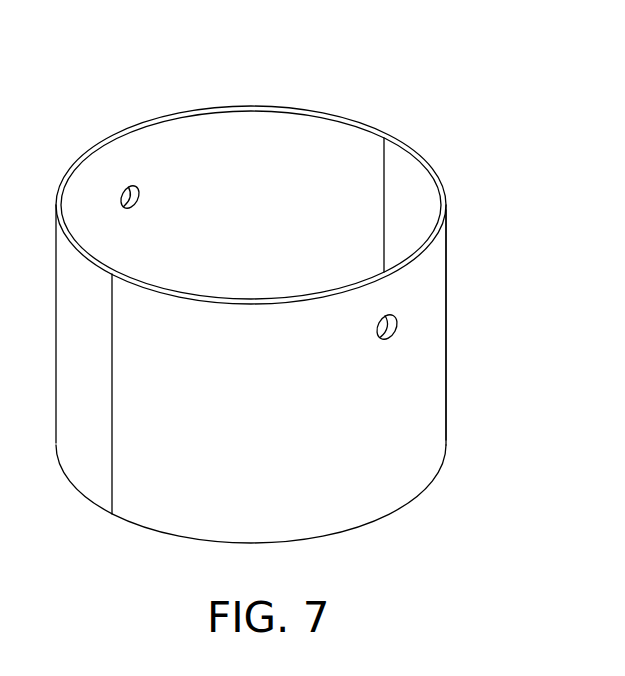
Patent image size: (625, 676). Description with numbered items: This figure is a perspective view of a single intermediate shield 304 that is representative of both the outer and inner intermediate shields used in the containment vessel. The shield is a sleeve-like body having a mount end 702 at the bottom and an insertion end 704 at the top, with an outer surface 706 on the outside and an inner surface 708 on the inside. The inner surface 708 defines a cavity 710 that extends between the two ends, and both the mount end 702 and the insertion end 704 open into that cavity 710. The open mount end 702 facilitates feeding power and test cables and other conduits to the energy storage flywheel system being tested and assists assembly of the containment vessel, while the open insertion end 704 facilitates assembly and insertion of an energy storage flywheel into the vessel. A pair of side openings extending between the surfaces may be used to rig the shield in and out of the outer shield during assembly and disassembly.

The outer intermediate shield 304 is at (300, 289).
The mount end 702 is at (413, 500).
The insertion end 704 is at (292, 107).
The outer surface 706 is at (446, 283).
The inner surface 708 is at (173, 133).
The cavity 710 is at (248, 183).